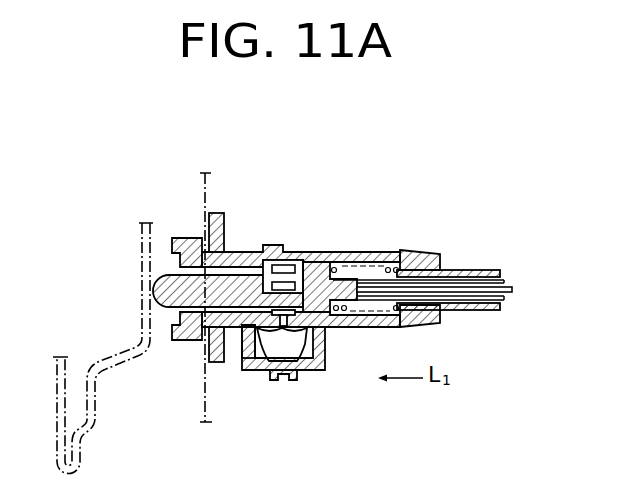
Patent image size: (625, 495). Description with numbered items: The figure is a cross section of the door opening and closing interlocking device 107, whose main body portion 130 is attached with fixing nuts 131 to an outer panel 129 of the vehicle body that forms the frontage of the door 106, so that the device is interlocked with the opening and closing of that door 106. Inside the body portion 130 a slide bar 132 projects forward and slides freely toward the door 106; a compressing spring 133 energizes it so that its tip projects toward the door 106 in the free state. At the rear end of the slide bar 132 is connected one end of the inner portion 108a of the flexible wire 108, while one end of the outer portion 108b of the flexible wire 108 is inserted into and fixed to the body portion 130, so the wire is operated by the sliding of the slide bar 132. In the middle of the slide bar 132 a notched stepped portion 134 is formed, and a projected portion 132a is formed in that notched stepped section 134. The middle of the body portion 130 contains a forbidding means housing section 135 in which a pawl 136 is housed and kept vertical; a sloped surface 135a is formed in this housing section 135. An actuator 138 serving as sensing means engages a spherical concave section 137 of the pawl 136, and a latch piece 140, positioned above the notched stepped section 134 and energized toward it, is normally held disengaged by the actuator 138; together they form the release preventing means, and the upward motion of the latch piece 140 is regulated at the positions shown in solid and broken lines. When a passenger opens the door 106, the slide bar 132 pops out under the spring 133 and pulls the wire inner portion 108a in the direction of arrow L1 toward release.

The door 106 is at (132, 372).
The door opening and closing interlocking device 107 is at (338, 383).
The flexible wire 108 is at (473, 270).
The inner portion of the flexible wire 108a is at (504, 306).
The outer portion of the flexible wire 108b is at (496, 270).
The outer panel 129 is at (203, 215).
The main body portion 130 is at (268, 247).
The fixing nuts 131 is at (187, 340).
The slide bar 132 is at (228, 250).
The projected portion 132a is at (333, 328).
The compressing spring 133 is at (372, 255).
The notched stepped portion 134 is at (337, 255).
The forbidding means housing section 135 is at (328, 343).
The sloped surface 135a is at (278, 266).
The pawl 136 is at (267, 380).
The spherical concave section 137 is at (291, 349).
The actuator 138 is at (247, 340).
The latch piece 140 is at (305, 260).